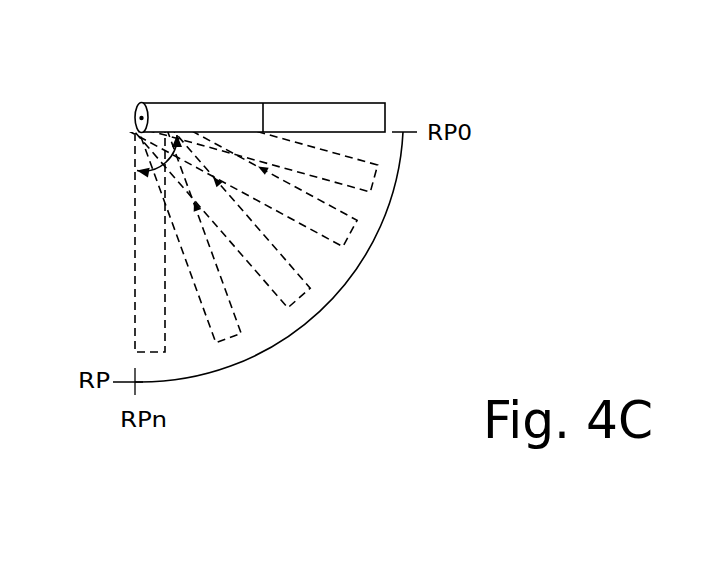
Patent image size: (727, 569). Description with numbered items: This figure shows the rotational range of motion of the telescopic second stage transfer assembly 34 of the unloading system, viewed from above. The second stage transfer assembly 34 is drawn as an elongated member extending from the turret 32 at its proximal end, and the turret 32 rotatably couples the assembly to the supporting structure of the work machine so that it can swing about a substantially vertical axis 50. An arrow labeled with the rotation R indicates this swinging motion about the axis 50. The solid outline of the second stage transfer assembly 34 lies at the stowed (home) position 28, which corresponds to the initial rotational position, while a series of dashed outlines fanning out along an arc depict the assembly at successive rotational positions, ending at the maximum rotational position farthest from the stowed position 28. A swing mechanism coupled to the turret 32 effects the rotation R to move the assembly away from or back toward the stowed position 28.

The stowed position 28 is at (392, 117).
The turret 32 is at (136, 110).
The second stage transfer assembly 34 is at (263, 82).
The axis 50 is at (139, 118).
The rotation R is at (165, 163).